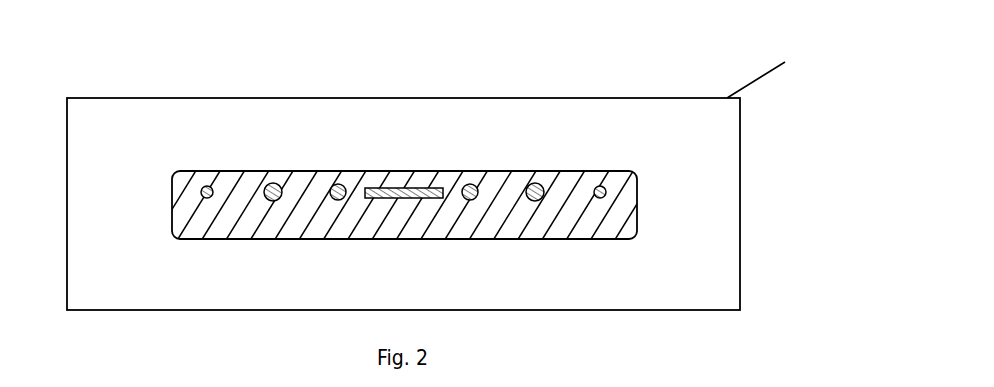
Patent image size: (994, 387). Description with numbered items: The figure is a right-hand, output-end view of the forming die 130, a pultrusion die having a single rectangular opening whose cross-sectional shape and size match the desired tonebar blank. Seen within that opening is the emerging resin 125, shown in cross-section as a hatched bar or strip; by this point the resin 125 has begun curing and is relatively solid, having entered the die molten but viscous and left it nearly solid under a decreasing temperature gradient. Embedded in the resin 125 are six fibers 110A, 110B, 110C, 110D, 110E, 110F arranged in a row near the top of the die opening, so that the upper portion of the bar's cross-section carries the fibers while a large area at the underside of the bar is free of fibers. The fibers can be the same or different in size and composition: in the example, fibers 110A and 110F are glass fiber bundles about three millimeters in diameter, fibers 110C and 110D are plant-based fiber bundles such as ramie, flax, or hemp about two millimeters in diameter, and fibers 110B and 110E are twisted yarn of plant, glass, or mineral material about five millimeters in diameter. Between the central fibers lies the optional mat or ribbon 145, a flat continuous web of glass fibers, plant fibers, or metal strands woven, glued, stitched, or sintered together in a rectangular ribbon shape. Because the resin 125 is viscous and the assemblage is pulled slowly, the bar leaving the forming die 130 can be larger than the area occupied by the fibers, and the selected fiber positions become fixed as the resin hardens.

The fiber 110A is at (205, 187).
The fiber 110B is at (273, 184).
The fiber 110C is at (338, 185).
The fiber 110D is at (471, 185).
The fiber 110E is at (536, 184).
The fiber 110F is at (604, 188).
The mat or ribbon 145 is at (406, 188).
The resin 125 is at (637, 186).
The forming die 130 is at (740, 277).